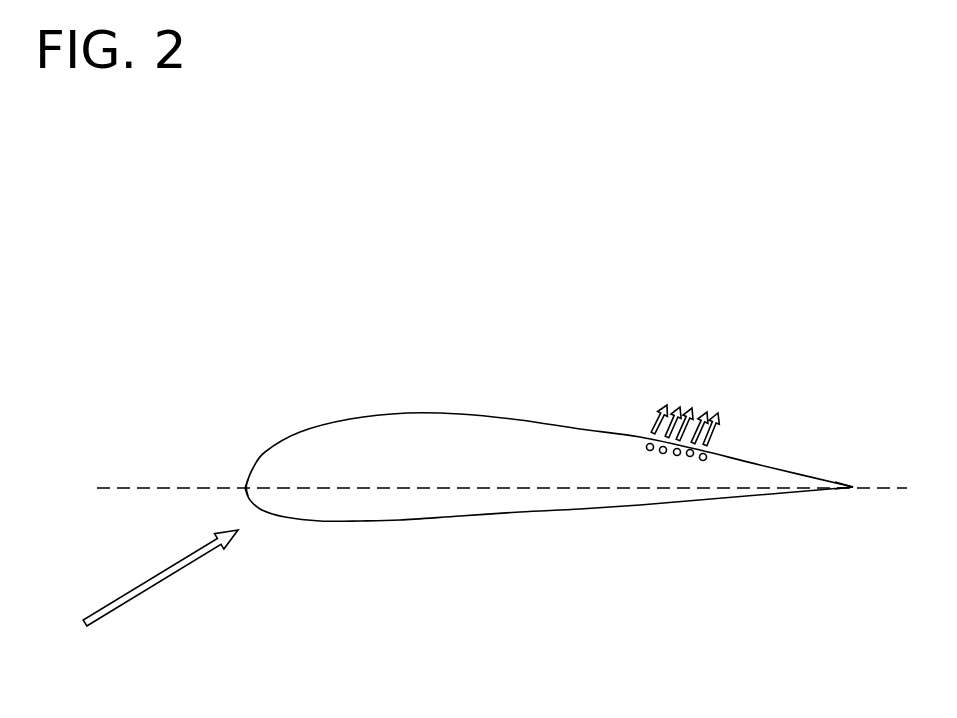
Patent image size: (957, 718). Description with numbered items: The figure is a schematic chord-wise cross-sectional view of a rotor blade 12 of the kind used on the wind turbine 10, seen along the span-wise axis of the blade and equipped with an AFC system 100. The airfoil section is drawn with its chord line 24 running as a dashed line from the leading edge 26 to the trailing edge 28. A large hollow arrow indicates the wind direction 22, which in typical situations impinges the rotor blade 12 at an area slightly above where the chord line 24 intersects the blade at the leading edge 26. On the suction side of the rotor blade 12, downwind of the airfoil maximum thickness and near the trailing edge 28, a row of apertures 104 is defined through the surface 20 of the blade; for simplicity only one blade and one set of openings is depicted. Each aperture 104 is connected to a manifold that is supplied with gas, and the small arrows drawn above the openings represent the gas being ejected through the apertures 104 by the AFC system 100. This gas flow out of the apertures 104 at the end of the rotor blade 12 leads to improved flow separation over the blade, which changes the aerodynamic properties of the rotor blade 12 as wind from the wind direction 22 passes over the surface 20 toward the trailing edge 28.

The wind turbine 10 is at (765, 260).
The rotor blade 12 is at (547, 365).
The surface 20 is at (773, 478).
The wind direction 22 is at (218, 550).
The chord line 24 is at (117, 488).
The leading edge 26 is at (245, 488).
The trailing edge 28 is at (853, 487).
The AFC system 100 is at (697, 390).
The aperture 104 is at (677, 456).